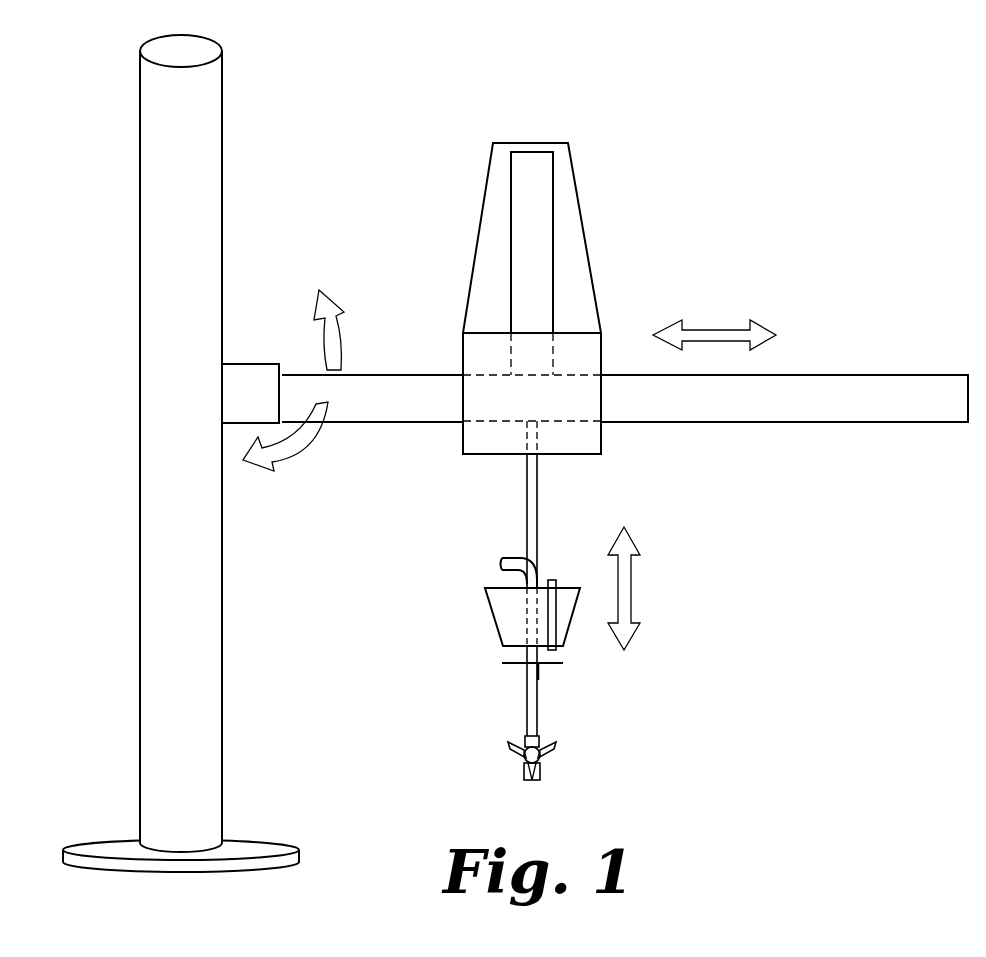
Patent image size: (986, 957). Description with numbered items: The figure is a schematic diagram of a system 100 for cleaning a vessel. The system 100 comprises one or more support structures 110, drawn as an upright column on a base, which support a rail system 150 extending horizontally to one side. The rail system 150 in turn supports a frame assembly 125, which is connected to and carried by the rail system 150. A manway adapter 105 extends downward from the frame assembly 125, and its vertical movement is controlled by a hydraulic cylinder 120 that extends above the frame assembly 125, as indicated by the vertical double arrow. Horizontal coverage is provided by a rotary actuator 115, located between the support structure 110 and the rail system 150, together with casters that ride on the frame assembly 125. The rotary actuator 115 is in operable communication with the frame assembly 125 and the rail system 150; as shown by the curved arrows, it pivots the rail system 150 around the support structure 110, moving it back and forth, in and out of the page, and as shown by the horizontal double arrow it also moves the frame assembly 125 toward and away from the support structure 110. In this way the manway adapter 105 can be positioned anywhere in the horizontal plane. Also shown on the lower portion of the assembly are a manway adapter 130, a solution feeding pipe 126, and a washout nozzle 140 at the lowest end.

The system 100 is at (806, 754).
The manway adapter 105 is at (622, 700).
The support structure 110 is at (167, 580).
The rotary actuator 115 is at (245, 383).
The hydraulic cylinder 120 is at (568, 220).
The frame assembly 125 is at (566, 390).
The solution feeding pipe 126 is at (532, 665).
The manway adapter 130 is at (507, 608).
The washout nozzle 140 is at (541, 752).
The rail system 150 is at (916, 400).